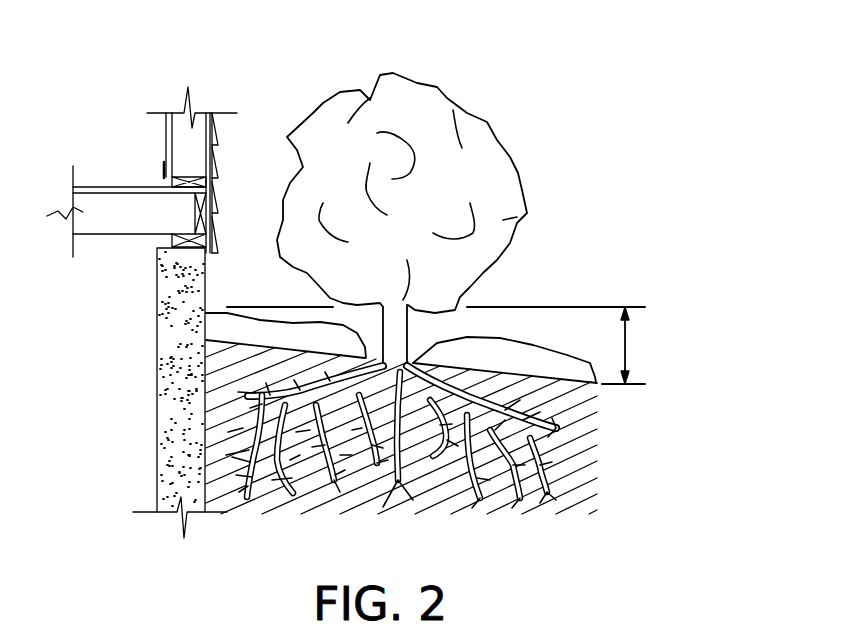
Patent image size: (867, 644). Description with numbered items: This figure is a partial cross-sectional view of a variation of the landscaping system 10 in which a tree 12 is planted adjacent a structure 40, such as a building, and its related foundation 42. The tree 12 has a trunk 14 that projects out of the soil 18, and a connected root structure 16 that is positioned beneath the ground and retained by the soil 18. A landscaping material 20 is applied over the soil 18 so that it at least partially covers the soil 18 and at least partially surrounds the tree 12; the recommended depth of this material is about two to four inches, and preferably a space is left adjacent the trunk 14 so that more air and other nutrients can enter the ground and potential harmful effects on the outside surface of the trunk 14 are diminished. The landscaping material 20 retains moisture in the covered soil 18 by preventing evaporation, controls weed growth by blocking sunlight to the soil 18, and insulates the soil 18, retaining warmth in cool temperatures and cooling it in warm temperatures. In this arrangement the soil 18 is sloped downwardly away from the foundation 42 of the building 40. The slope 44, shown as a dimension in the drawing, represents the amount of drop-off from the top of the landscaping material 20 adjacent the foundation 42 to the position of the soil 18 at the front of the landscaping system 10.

The landscaping system 10 is at (655, 167).
The tree 12 is at (478, 127).
The trunk 14 is at (398, 342).
The root structure 16 is at (538, 500).
The soil 18 is at (587, 436).
The landscaping material 20 is at (545, 358).
The structure 40 is at (215, 80).
The foundation 42 is at (165, 398).
The slope 44 is at (627, 348).